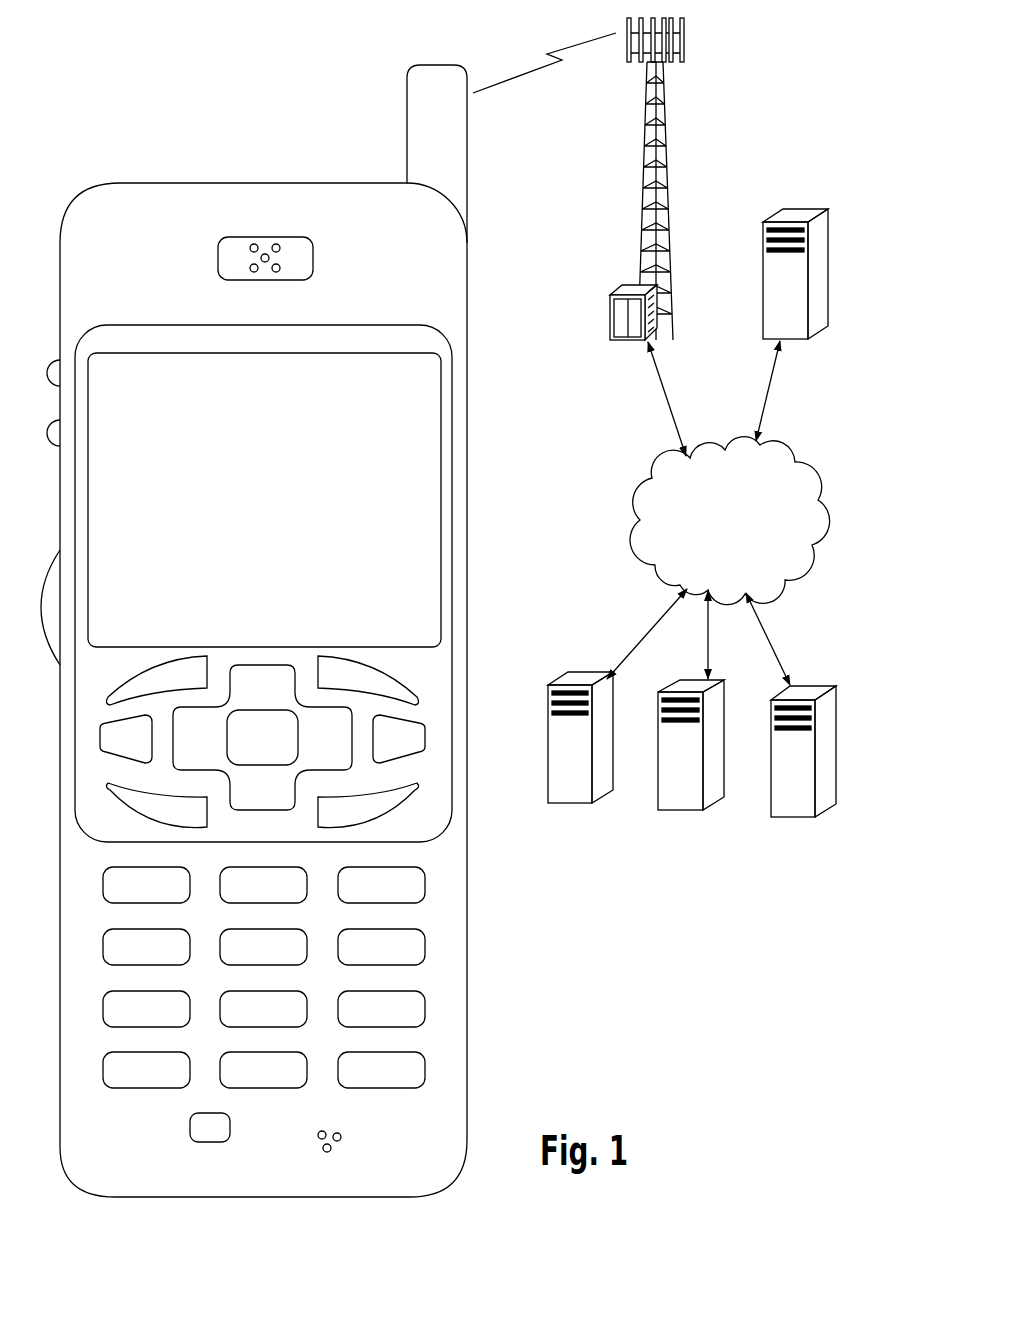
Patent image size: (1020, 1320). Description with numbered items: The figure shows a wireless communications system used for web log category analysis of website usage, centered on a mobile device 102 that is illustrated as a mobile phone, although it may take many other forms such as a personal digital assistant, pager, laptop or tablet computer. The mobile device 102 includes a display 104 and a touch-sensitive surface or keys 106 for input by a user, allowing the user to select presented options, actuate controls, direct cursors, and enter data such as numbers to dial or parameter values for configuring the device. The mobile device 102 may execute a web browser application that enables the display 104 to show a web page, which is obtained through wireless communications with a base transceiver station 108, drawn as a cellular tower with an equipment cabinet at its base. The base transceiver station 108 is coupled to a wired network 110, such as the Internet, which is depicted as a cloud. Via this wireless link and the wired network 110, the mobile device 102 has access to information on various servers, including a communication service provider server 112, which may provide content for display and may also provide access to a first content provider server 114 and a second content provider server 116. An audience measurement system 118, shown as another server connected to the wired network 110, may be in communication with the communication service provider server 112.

The mobile device 102 is at (108, 1198).
The display 104 is at (452, 357).
The keys 106 is at (478, 652).
The base transceiver station 108 is at (640, 195).
The wired network 110 is at (652, 565).
The communication service provider server 112 is at (575, 803).
The first content provider server 114 is at (685, 810).
The second content provider server 116 is at (797, 817).
The audience measurement system 118 is at (806, 209).